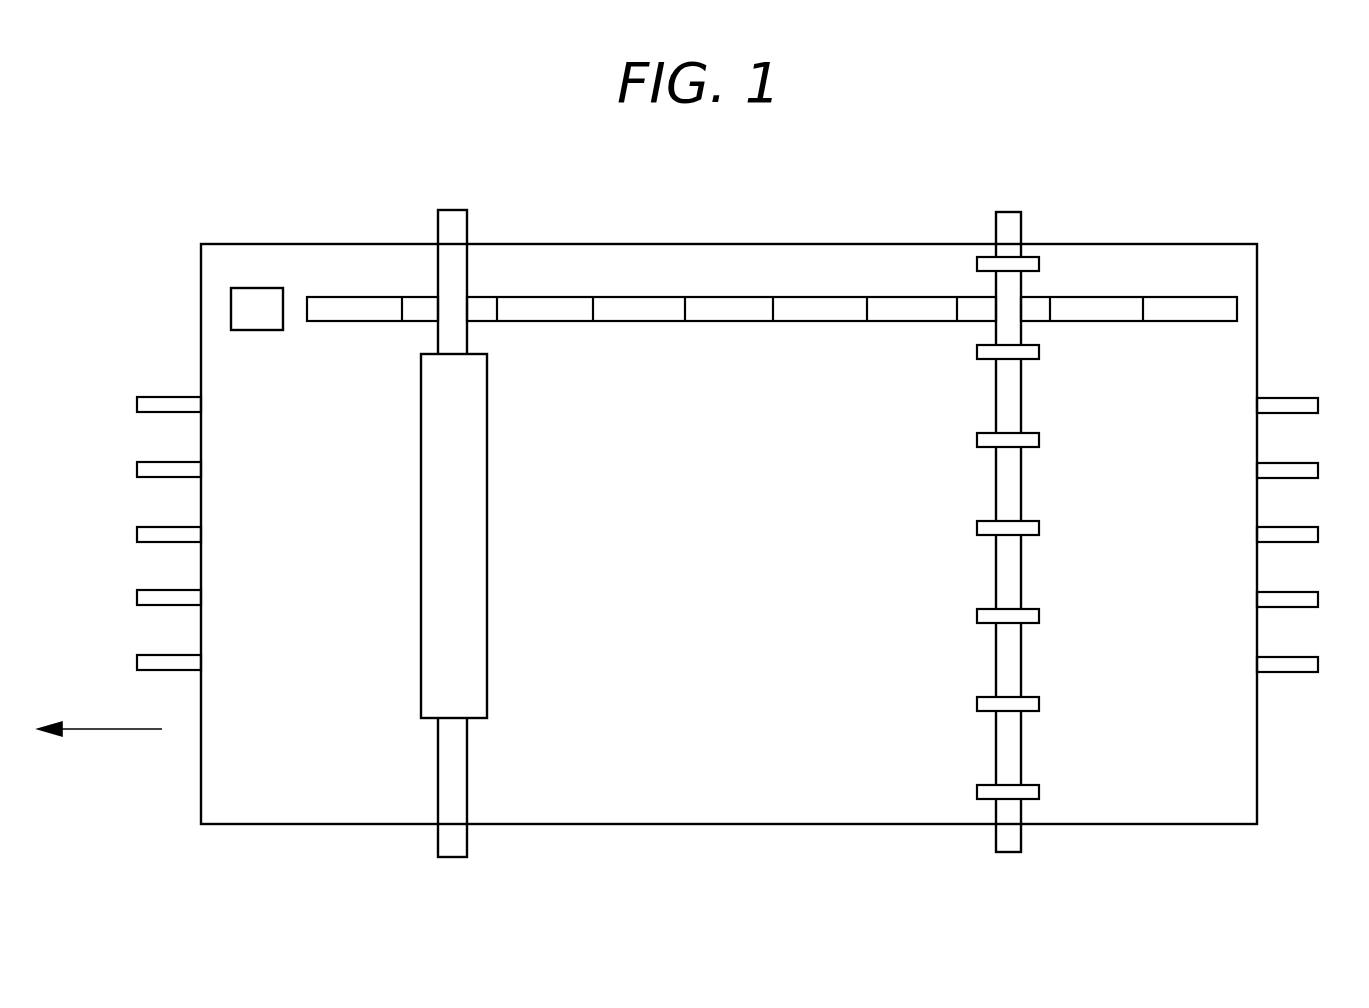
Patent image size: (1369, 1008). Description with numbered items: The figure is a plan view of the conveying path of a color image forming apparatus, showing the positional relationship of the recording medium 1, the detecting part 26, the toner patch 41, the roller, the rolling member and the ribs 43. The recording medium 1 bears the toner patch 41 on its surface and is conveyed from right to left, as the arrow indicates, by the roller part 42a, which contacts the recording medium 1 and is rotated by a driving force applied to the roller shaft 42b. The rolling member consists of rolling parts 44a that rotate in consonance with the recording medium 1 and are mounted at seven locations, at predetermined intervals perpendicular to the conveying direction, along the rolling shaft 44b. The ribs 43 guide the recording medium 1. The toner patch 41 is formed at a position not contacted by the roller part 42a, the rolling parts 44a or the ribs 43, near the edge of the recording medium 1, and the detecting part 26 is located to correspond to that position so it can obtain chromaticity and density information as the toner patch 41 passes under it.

The recording medium 1 is at (1160, 825).
The detecting part 26 is at (262, 333).
The toner patch 41 is at (1186, 323).
The roller part 42a is at (473, 660).
The roller shaft 42b is at (454, 210).
The ribs 43 is at (1313, 402).
The rolling parts 44a is at (1039, 262).
The rolling shaft 44b is at (1010, 212).